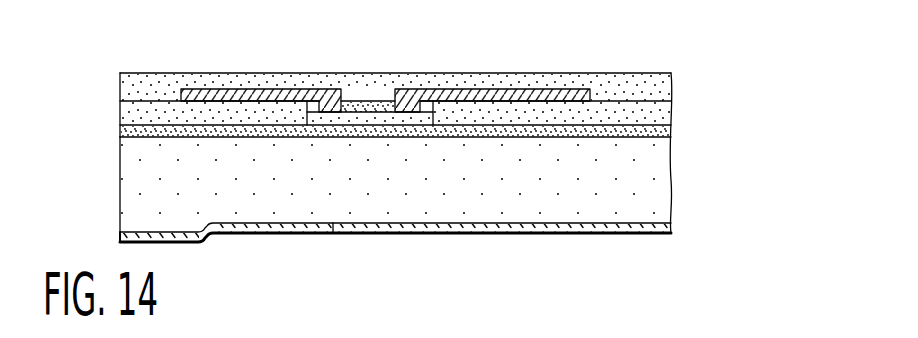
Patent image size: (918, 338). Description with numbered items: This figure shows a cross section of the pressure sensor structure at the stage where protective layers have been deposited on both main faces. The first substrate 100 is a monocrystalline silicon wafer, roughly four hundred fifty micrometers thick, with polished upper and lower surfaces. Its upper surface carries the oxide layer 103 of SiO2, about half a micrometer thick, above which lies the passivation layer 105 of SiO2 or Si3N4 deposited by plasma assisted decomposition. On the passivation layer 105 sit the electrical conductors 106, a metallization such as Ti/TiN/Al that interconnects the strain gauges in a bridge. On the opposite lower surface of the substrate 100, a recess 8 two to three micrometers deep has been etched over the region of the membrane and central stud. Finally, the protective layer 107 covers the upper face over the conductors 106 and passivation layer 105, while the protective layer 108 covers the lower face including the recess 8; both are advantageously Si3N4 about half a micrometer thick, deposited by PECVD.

The recess 8 is at (333, 233).
The first substrate 100 is at (676, 201).
The oxide layer 103 is at (671, 130).
The passivation layer 105 is at (643, 110).
The electrical conductors 106 is at (252, 91).
The protective layer 107 is at (373, 86).
The protective layer 108 is at (503, 226).